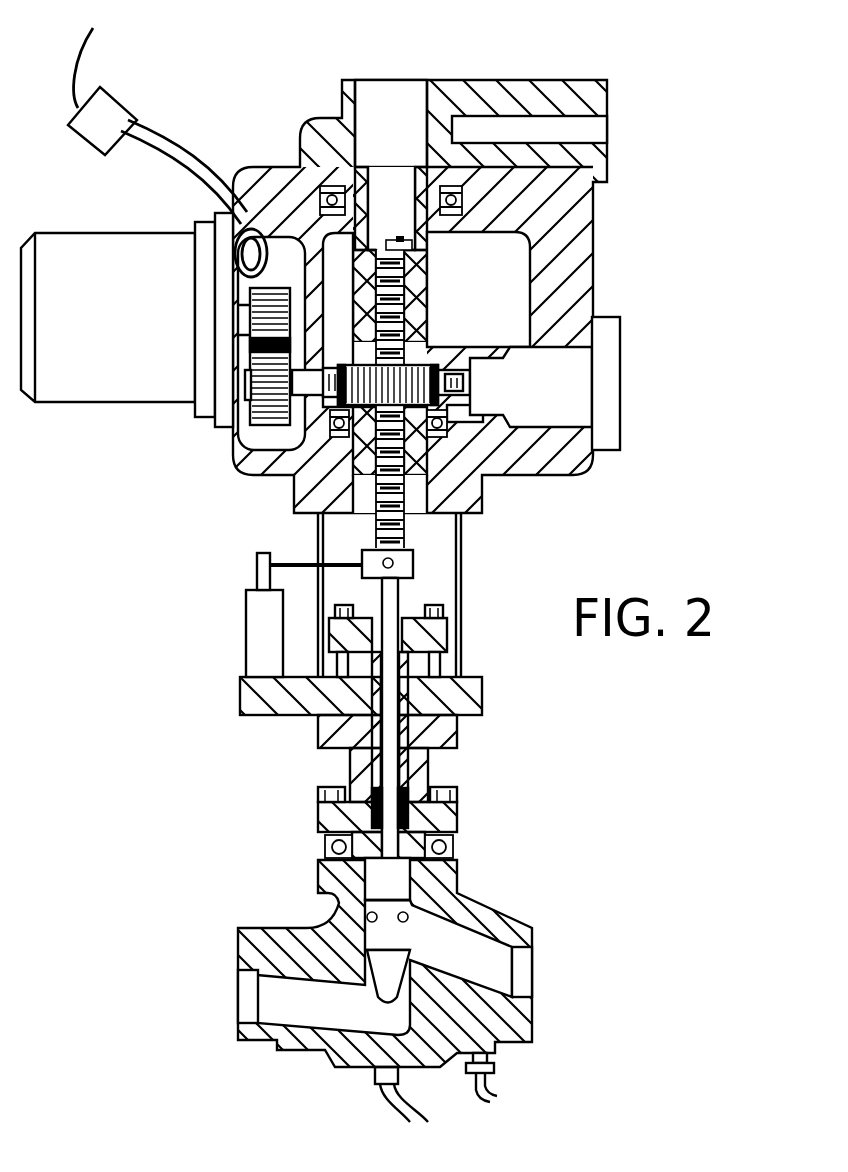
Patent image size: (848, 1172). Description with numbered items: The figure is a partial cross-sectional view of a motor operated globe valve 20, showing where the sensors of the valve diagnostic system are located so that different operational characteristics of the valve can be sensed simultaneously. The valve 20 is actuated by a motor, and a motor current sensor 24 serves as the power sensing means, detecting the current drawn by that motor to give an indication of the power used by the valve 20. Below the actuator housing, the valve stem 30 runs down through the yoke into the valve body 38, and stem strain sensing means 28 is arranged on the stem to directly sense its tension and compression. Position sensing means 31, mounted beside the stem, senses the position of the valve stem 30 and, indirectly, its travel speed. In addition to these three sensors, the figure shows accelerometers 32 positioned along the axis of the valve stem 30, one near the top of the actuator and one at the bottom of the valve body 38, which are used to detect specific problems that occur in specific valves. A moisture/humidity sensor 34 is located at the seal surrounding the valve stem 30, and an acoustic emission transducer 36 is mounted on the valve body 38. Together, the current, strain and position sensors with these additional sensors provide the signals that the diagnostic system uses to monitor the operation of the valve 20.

The valve 20 is at (519, 830).
The motor current sensor 24 is at (113, 107).
The stem strain sensing means 28 is at (405, 598).
The valve stem 30 is at (388, 770).
The position sensing means 31 is at (262, 636).
The accelerometers 32 is at (428, 246).
The moisture/humidity sensor 34 is at (432, 666).
The acoustic emission transducer 36 is at (492, 1082).
The valve body 38 is at (492, 905).